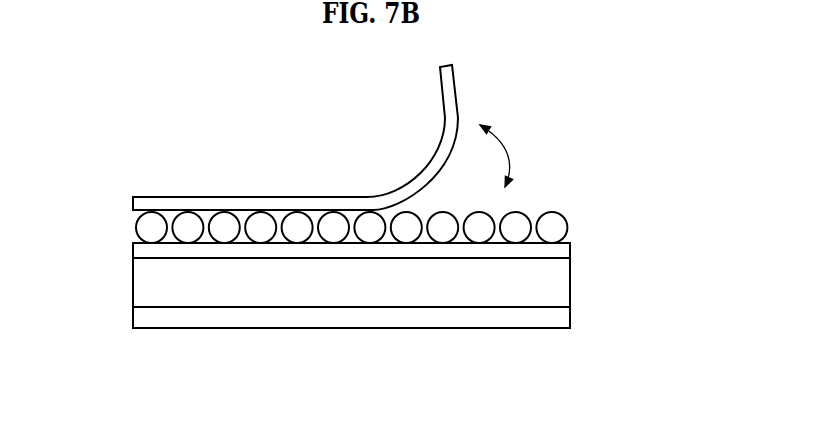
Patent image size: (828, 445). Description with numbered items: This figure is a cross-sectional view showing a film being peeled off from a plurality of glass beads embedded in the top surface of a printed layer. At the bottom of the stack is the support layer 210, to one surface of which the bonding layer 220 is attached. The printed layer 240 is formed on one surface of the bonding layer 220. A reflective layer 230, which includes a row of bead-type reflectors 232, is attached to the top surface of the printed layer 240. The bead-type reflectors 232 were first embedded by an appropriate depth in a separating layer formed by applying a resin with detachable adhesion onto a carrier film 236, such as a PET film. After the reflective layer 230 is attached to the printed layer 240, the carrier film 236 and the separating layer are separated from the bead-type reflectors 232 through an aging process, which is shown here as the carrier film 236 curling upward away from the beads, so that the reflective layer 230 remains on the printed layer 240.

The support layer 210 is at (557, 317).
The bonding layer 220 is at (557, 275).
The printed layer 240 is at (557, 251).
The reflective layer 230 is at (577, 224).
The bead-type reflector 232 is at (150, 226).
The carrier film 236 is at (275, 203).